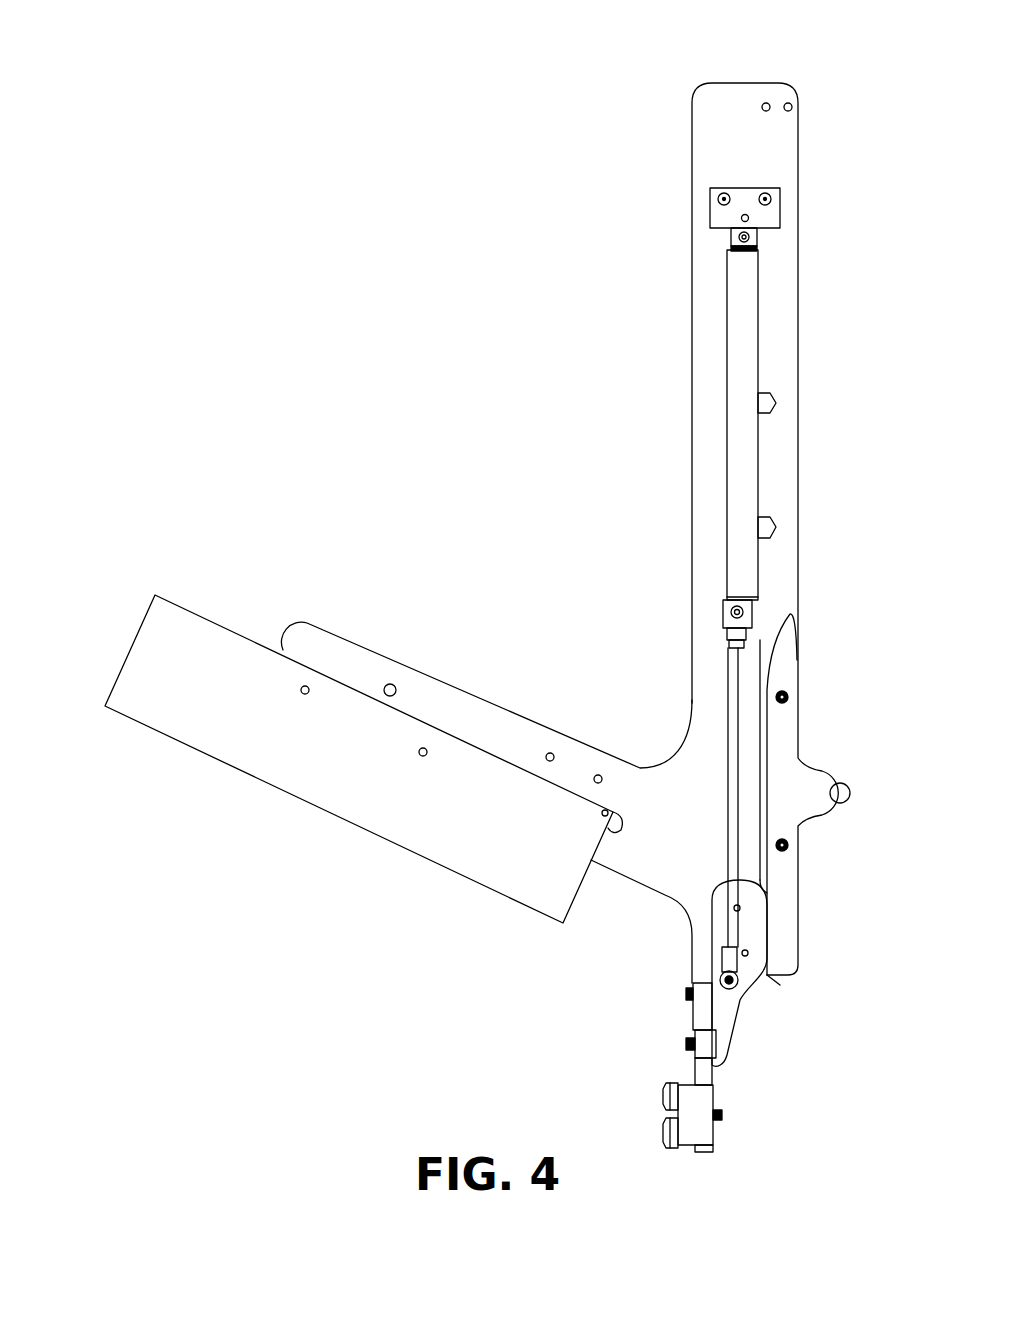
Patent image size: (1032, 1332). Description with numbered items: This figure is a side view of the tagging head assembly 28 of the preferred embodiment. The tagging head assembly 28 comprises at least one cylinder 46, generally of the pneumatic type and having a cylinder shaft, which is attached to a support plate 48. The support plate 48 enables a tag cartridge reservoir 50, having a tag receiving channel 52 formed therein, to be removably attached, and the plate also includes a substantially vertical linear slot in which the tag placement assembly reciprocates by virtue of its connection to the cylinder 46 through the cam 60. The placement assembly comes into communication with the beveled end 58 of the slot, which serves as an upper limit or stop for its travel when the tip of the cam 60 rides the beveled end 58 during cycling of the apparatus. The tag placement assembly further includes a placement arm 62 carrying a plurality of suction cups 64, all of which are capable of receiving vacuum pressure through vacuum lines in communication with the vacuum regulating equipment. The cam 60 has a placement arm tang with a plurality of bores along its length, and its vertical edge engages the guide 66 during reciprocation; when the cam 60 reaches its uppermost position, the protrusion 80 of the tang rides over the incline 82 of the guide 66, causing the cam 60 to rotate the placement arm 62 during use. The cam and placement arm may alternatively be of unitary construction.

The tagging head assembly 28 is at (700, 64).
The cylinder 46 is at (735, 455).
The incline 82 is at (775, 653).
The support plate 48 is at (662, 770).
The tag receiving channel 52 is at (128, 652).
The tag cartridge reservoir 50 is at (418, 843).
The beveled end 58 is at (757, 604).
The guide 66 is at (785, 806).
The protrusion 80 is at (770, 978).
The cam 60 is at (737, 995).
The placement arm 62 is at (695, 1013).
The suction cups 64 is at (668, 1097).